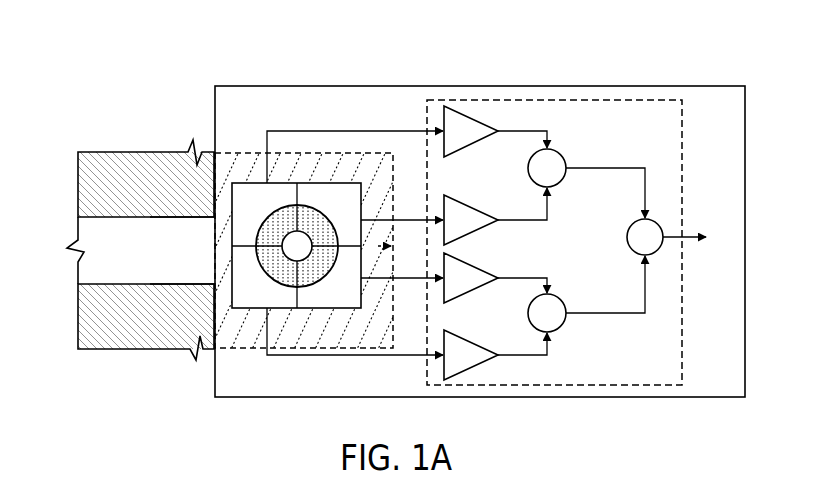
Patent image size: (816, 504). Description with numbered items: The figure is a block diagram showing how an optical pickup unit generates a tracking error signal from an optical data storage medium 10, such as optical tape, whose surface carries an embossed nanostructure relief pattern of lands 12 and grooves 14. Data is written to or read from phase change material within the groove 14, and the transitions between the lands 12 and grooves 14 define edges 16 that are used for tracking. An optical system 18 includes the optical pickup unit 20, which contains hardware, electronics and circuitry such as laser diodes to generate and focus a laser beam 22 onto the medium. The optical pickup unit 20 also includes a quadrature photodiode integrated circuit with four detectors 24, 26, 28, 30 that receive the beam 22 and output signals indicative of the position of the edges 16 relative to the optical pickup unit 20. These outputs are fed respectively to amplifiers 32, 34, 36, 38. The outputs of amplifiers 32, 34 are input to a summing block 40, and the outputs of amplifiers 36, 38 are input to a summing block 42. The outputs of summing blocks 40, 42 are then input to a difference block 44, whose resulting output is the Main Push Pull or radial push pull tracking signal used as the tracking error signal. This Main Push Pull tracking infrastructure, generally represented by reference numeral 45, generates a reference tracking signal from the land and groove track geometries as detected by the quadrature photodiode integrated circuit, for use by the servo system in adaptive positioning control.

The optical data storage medium 10 is at (160, 99).
The land 12 is at (90, 191).
The groove 14 is at (88, 275).
The edge 16 is at (163, 218).
The optical system 18 is at (514, 64).
The optical pickup unit 20 is at (214, 382).
The laser beam 22 is at (296, 242).
The detector 24 is at (238, 225).
The detector 26 is at (352, 206).
The detector 28 is at (353, 278).
The detector 30 is at (238, 278).
The amplifier 32 is at (474, 110).
The amplifier 34 is at (462, 195).
The amplifier 36 is at (489, 285).
The amplifier 38 is at (470, 330).
The summing block 40 is at (560, 153).
The summing block 42 is at (562, 326).
The difference block 44 is at (626, 240).
The MPP tracking infrastructure 45 is at (683, 162).